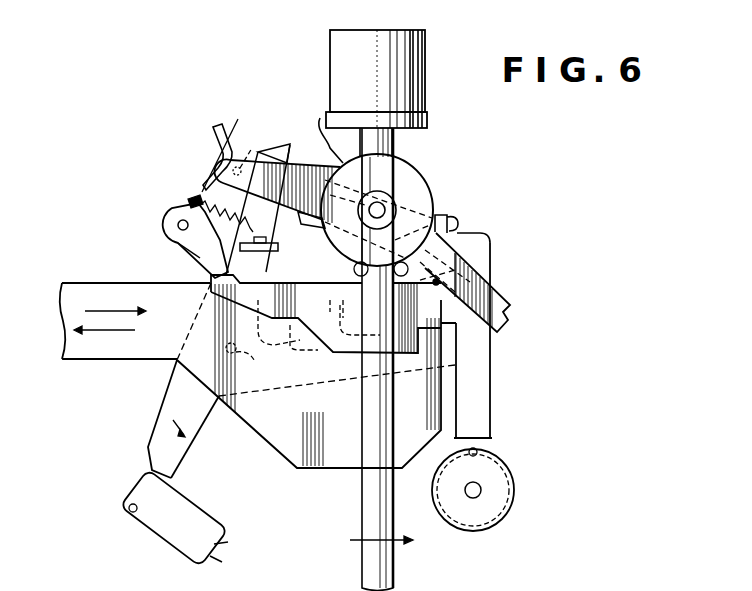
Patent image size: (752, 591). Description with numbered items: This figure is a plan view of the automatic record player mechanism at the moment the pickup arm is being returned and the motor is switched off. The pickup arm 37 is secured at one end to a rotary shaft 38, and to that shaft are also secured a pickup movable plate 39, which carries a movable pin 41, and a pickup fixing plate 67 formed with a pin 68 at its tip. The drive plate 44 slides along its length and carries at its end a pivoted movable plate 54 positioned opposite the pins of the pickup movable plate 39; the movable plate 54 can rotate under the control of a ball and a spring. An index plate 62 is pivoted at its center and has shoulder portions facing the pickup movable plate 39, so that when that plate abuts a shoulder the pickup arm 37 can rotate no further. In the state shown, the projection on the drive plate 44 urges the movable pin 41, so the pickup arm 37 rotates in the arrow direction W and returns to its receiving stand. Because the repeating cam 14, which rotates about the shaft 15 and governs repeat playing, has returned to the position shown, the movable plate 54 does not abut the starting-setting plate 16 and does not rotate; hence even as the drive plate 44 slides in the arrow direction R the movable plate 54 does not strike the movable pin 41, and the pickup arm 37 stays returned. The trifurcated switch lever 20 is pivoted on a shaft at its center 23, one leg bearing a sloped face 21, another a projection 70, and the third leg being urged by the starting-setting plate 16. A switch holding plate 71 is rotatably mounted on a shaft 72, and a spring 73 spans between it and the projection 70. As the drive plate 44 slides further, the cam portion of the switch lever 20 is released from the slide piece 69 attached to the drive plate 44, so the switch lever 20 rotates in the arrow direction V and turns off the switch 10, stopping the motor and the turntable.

The switch 10 is at (186, 500).
The repeating cam 14 is at (505, 470).
The shaft 15 is at (482, 492).
The starting-setting plate 16 is at (490, 377).
The switch lever 20 is at (205, 410).
The sloped face 21 is at (150, 460).
The center 23 is at (240, 356).
The pickup arm 37 is at (362, 504).
The rotary shaft 38 is at (386, 205).
The pickup movable plate 39 is at (505, 316).
The movable pin 41 is at (458, 228).
The drive plate 44 is at (142, 352).
The movable plate 54 is at (490, 268).
The index plate 62 is at (277, 150).
The pickup fixing plate 67 is at (313, 148).
The pin 68 is at (240, 150).
The slide piece 69 is at (332, 326).
The projection 70 is at (262, 264).
The switch holding plate 71 is at (184, 258).
The shaft 72 is at (177, 224).
The spring 73 is at (192, 202).